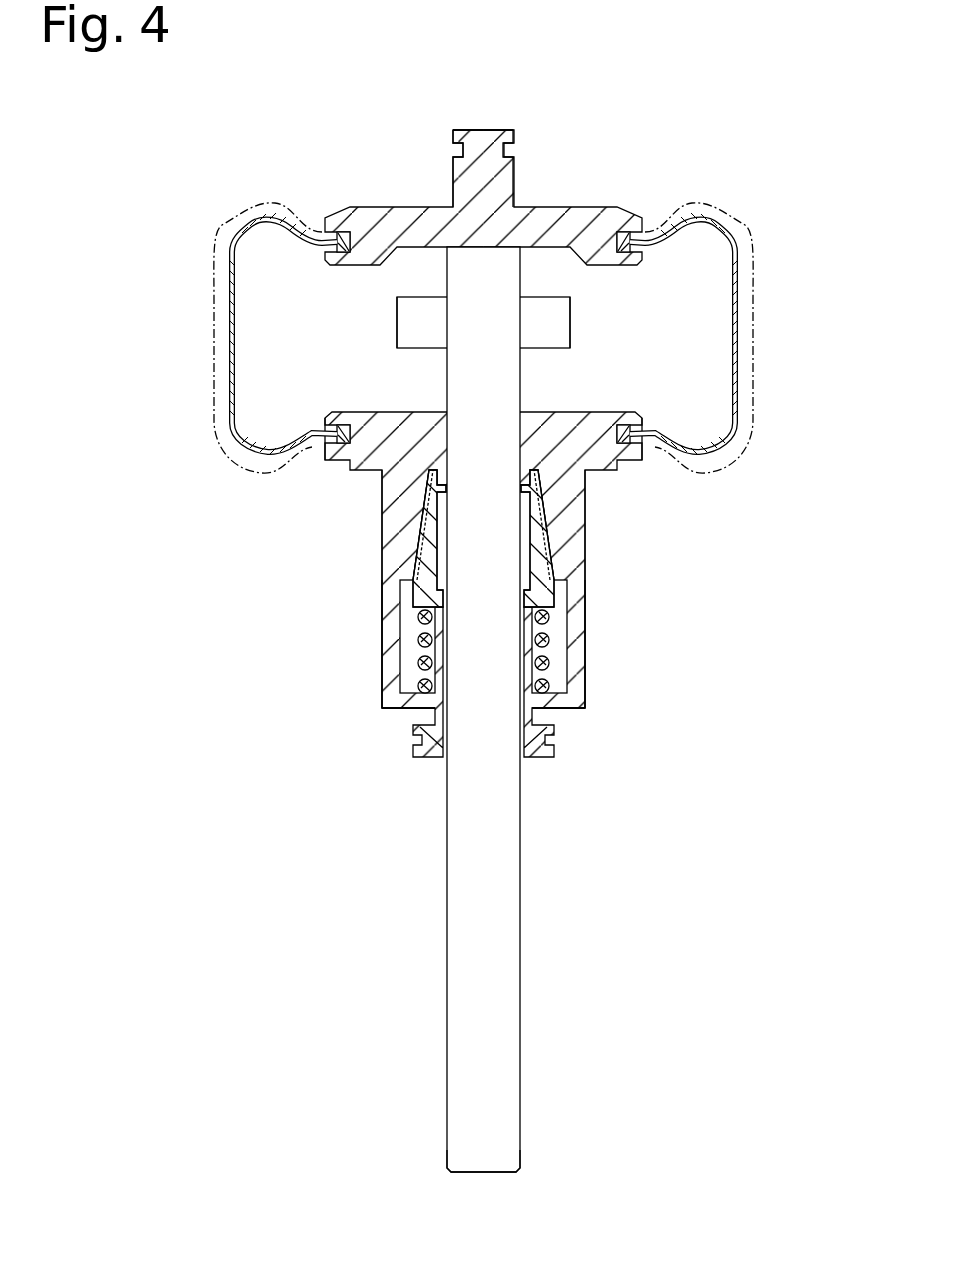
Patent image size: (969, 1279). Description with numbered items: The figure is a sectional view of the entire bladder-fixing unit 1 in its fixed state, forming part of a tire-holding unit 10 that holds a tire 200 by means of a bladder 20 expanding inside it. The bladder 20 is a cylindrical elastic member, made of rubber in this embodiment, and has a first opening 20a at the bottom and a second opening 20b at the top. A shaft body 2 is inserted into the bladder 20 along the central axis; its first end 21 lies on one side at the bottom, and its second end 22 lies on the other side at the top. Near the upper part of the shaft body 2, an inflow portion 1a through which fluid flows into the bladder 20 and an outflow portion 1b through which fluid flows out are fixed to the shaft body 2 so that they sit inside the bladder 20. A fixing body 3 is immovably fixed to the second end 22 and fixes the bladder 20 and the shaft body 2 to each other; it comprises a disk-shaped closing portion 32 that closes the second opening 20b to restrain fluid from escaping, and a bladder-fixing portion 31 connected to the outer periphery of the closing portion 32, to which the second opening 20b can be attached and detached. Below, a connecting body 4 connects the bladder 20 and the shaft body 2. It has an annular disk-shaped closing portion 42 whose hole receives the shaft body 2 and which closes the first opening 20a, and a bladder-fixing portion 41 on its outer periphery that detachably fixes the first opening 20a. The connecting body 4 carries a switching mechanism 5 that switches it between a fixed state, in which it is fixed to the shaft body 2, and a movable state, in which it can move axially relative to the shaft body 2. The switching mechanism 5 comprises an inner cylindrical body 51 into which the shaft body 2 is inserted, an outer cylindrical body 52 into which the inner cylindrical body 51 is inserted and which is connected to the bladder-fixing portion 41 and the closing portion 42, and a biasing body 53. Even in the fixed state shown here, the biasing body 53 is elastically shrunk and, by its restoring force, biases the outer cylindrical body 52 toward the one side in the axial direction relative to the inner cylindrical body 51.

The tire-holding unit 10 is at (765, 98).
The bladder-fixing unit 1 is at (748, 541).
The inflow portion 1a is at (570, 322).
The outflow portion 1b is at (397, 322).
The shaft body 2 is at (528, 917).
The first end 21 is at (520, 1140).
The second end 22 is at (520, 273).
The fixing body 3 is at (376, 189).
The bladder-fixing portion 31 is at (321, 240).
The closing portion 32 is at (433, 207).
The connecting body 4 is at (262, 655).
The bladder-fixing portion 41 is at (322, 450).
The closing portion 42 is at (428, 412).
The switching mechanism 5 is at (603, 608).
The inner cylindrical body 51 is at (404, 602).
The outer cylindrical body 52 is at (378, 636).
The biasing body 53 is at (417, 669).
The bladder 20 is at (748, 356).
The tire 200 is at (727, 222).
The first opening 20a is at (624, 450).
The second opening 20b is at (622, 238).